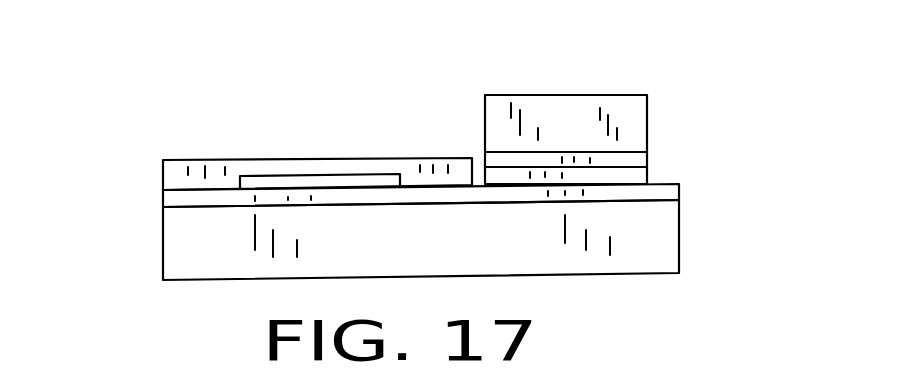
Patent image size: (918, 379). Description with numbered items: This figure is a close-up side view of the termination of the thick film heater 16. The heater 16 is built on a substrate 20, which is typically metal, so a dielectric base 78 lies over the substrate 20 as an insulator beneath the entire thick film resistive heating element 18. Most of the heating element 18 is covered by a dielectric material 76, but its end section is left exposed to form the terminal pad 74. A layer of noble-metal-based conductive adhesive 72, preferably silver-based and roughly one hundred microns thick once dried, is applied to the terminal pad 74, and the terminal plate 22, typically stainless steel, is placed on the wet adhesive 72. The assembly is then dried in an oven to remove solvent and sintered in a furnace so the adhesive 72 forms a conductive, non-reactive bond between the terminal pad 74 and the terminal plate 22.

The heater 16 is at (120, 233).
The thick film resistive heating element 18 is at (325, 182).
The substrate 20 is at (642, 250).
The terminal plate 22 is at (633, 120).
The conductive adhesive 72 is at (635, 158).
The terminal pad 74 is at (638, 175).
The dielectric material 76 is at (210, 177).
The dielectric base 78 is at (667, 192).